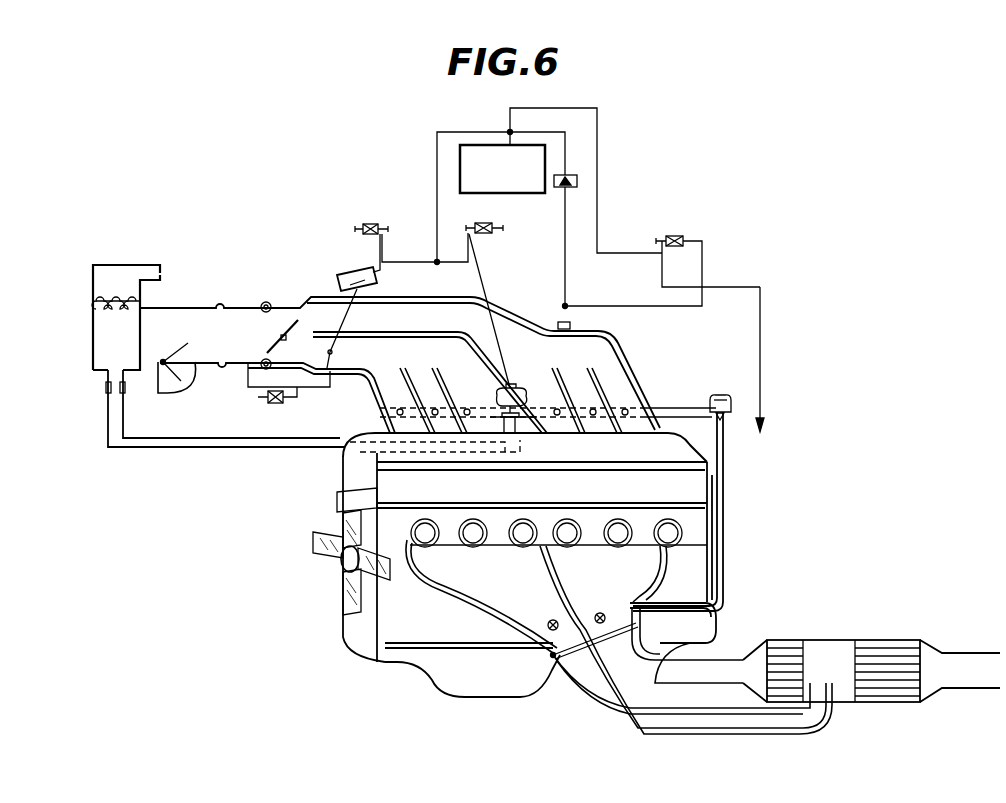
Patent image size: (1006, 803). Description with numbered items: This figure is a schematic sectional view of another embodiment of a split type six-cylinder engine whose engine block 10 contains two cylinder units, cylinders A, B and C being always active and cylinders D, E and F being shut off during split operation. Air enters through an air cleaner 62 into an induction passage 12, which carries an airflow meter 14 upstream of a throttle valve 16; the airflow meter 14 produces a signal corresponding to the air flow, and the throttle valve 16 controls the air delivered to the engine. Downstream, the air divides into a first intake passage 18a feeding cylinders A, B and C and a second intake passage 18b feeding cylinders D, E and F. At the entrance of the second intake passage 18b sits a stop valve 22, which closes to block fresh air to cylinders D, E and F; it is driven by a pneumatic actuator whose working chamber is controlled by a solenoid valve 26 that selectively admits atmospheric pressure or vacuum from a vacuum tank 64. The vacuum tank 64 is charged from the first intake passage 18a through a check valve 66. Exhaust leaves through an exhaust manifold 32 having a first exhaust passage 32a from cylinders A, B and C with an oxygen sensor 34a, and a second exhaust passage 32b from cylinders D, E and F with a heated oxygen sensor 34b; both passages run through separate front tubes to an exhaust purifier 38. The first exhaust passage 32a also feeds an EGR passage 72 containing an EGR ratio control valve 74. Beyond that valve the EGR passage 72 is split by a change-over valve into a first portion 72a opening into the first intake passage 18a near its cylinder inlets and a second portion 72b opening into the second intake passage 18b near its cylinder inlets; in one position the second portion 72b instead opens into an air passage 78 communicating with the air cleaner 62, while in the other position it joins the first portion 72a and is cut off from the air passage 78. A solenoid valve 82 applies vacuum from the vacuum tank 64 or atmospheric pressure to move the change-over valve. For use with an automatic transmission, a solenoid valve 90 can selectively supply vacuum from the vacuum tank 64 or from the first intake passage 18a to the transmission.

The engine block 10 is at (340, 470).
The induction passage 12 is at (188, 311).
The airflow meter 14 is at (171, 387).
The throttle valve 16 is at (271, 340).
The first intake passage 18a is at (605, 346).
The second intake passage 18b is at (372, 376).
The stop valve 22 is at (318, 350).
The solenoid valve 26 is at (372, 226).
The exhaust manifold 32 is at (494, 610).
The first exhaust passage 32a is at (618, 586).
The second exhaust passage 32b is at (528, 586).
The oxygen sensor 34a is at (634, 615).
The oxygen sensor with heater 34b is at (553, 658).
The exhaust purifier 38 is at (885, 704).
The air cleaner 62 is at (120, 265).
The vacuum tank 64 is at (531, 196).
The check valve 66 is at (578, 180).
The EGR passage 72 is at (725, 521).
The EGR passage first portion 72a is at (626, 405).
The EGR passage second portion 72b is at (458, 402).
The EGR ratio control valve 74 is at (722, 395).
The air passage 78 is at (222, 448).
The solenoid valve 82 is at (484, 236).
The solenoid valve 90 is at (690, 235).